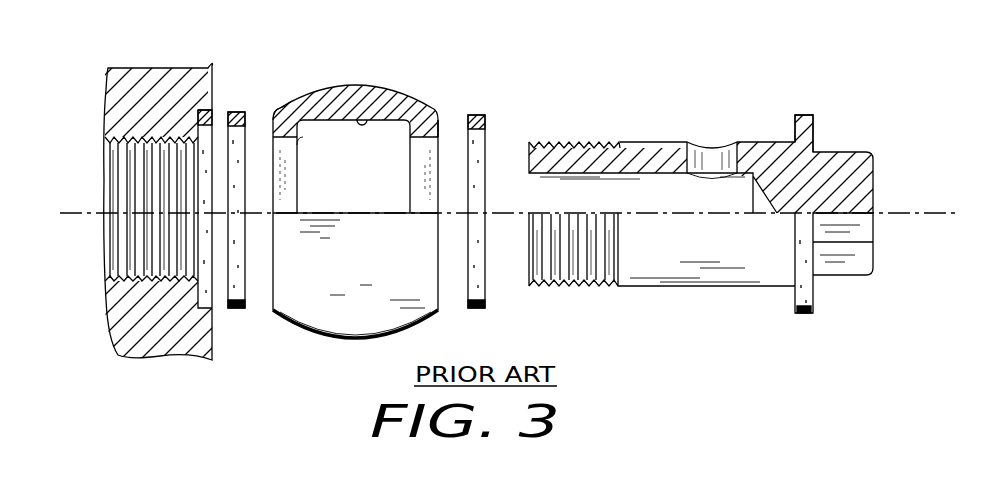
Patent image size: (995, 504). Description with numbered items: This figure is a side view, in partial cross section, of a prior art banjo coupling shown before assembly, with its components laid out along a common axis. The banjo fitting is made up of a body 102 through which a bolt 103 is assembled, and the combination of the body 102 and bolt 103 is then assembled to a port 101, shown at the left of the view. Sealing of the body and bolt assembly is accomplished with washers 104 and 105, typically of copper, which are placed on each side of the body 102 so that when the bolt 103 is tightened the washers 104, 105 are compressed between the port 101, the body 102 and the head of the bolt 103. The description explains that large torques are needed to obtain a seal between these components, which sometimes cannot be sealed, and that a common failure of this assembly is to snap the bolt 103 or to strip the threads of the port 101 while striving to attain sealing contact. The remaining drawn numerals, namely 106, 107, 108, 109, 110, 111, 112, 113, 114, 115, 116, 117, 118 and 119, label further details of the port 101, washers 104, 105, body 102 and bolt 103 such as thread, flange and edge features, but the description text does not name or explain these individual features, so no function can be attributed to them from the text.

The port 101 is at (145, 189).
The body 102 is at (358, 200).
The bolt 103 is at (704, 219).
The washer 104 is at (267, 212).
The washer 105 is at (494, 203).
The flange lip 106 is at (212, 106).
The washer seal 107 is at (229, 121).
The washer bottom 108 is at (244, 300).
The cap lip 109 is at (268, 118).
The cap skirt edge 110 is at (444, 120).
The ring inner edge 111 is at (468, 122).
The ring seal 112 is at (485, 118).
The flange 113 is at (795, 120).
The detent 114 is at (366, 116).
The hex end 115 is at (832, 260).
The flange lower part 116 is at (806, 314).
The internal thread 117 is at (118, 150).
The external thread 118 is at (580, 140).
The cavity corner 119 is at (293, 149).